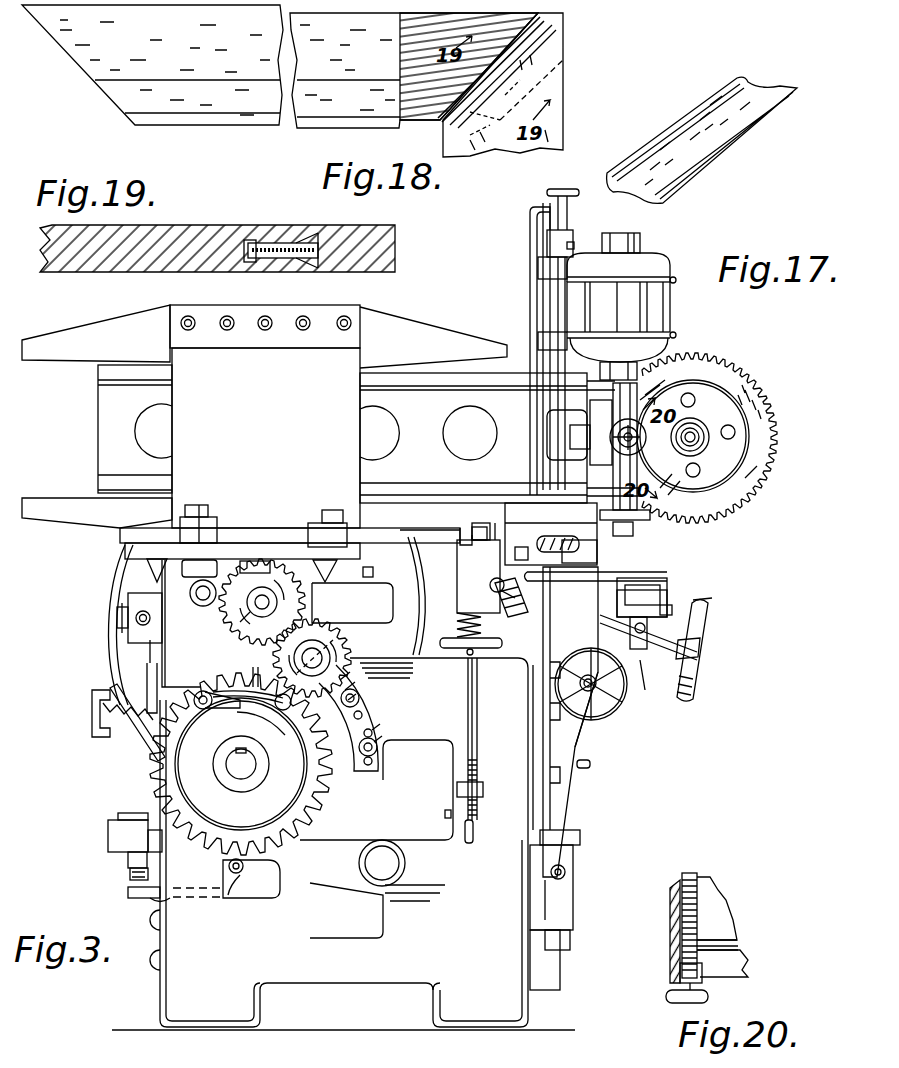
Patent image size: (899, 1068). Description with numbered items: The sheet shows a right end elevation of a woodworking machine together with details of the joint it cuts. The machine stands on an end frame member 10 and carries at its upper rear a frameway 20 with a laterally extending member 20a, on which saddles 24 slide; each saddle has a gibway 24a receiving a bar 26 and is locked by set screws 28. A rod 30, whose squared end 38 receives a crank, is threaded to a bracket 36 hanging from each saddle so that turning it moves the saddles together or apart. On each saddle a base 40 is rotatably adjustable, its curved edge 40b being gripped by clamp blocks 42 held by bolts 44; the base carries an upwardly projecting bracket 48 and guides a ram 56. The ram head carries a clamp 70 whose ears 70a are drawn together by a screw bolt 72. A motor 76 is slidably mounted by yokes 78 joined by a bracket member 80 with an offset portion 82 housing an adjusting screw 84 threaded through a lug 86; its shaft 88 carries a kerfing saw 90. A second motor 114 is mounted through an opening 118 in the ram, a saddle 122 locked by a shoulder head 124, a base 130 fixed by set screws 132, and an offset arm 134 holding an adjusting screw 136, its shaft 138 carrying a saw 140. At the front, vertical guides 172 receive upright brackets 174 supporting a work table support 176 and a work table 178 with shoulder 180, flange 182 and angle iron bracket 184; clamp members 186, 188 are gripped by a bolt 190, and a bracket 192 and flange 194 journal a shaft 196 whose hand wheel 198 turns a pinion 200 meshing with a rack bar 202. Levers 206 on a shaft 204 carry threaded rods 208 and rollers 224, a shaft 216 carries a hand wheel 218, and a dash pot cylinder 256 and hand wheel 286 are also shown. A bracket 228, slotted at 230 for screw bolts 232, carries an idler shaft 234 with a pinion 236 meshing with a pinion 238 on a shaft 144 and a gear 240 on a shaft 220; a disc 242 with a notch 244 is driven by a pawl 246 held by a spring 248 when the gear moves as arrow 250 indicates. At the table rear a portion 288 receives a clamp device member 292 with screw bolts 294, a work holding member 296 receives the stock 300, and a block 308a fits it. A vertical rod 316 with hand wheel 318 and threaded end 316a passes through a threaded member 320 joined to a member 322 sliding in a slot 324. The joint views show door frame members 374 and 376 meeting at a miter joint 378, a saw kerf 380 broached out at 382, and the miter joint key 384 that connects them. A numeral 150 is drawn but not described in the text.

In FIG. 3, the end frame member 10 is at (343, 844).
In FIG. 3, the frameway 20 is at (181, 623).
In FIG. 3, the laterally extending member 20a is at (148, 566).
In FIG. 3, the saddle 24 is at (242, 553).
In FIG. 3, the gibway 24a is at (159, 561).
In FIG. 3, the bar 26 is at (326, 561).
In FIG. 3, the set screw 28 is at (368, 578).
In FIG. 3, the rod or shaft 30 is at (190, 605).
In FIG. 3, the bracket 36 is at (248, 568).
In FIG. 3, the squared end 38 is at (203, 606).
In FIG. 3, the base 40 is at (290, 536).
In FIG. 3, the curved edge 40b is at (424, 536).
In FIG. 3, the clamp block 42 is at (217, 527).
In FIG. 3, the bolt 44 is at (325, 510).
In FIG. 3, the upwardly projecting bracket 48 is at (265, 416).
In FIG. 3, the ram 56 is at (342, 434).
In FIG. 3, the clamp 70 is at (600, 385).
In FIG. 3, the ear 70a is at (600, 465).
In FIG. 3, the screw bolt 72 is at (612, 368).
In FIG. 3, the motor 76 is at (621, 297).
In FIG. 3, the yoke 78 is at (545, 268).
In FIG. 3, the bracket member 80 is at (542, 302).
In FIG. 3, the offset portion 82 is at (540, 208).
In FIG. 3, the adjusting screw 84 is at (565, 180).
In FIG. 3, the lug 86 is at (573, 244).
In FIG. 3, the motor shaft 88 is at (626, 522).
In FIG. 3, the kerfing saw 90 is at (636, 524).
In FIG. 20, the motor 114 is at (720, 919).
In FIG. 3, the motor 114 is at (718, 395).
In FIG. 3, the opening 118 is at (567, 435).
In FIG. 20, the saddle 122 is at (673, 927).
In FIG. 3, the saddle 122 is at (708, 416).
In FIG. 3, the shoulder head 124 is at (580, 437).
In FIG. 20, the motor base 130 is at (695, 872).
In FIG. 3, the motor base 130 is at (640, 418).
In FIG. 3, the set screw 132 is at (657, 385).
In FIG. 20, the offset arm 134 is at (702, 980).
In FIG. 20, the adjusting screw 136 is at (700, 955).
In FIG. 3, the adjusting screw 136 is at (650, 440).
In FIG. 3, the motor shaft 138 is at (683, 450).
In FIG. 3, the saw 140 is at (730, 508).
In FIG. 3, the shaft 144 is at (262, 602).
In FIG. 3, the arcuate guide 150 is at (112, 600).
In FIG. 3, the vertical guide 172 is at (560, 745).
In FIG. 3, the upright bracket 174 is at (570, 722).
In FIG. 3, the work table support 176 is at (600, 572).
In FIG. 3, the work table 178 is at (541, 557).
In FIG. 3, the shoulder 180 is at (481, 568).
In FIG. 3, the flange 182 is at (660, 578).
In FIG. 3, the angle iron bracket 184 is at (672, 592).
In FIG. 3, the clamp member 186 is at (650, 625).
In FIG. 3, the clamp member 188 is at (705, 604).
In FIG. 3, the bolt 190 is at (685, 609).
In FIG. 3, the bracket 192 is at (665, 590).
In FIG. 3, the flange 194 is at (520, 630).
In FIG. 3, the shaft 196 is at (655, 650).
In FIG. 3, the hand wheel 198 is at (706, 625).
In FIG. 3, the pinion 200 is at (518, 616).
In FIG. 3, the rack bar 202 is at (490, 585).
In FIG. 3, the shaft 204 is at (405, 866).
In FIG. 3, the lever 206 is at (322, 610).
In FIG. 3, the threaded rod 208 is at (580, 836).
In FIG. 3, the shaft 216 is at (585, 676).
In FIG. 3, the hand wheel 218 is at (612, 718).
In FIG. 3, the shaft 220 is at (244, 772).
In FIG. 3, the roller 224 is at (236, 900).
In FIG. 3, the bracket 228 is at (372, 722).
In FIG. 3, the slot 230 is at (372, 734).
In FIG. 3, the screw bolt 232 is at (360, 698).
In FIG. 3, the idler shaft 234 is at (340, 660).
In FIG. 3, the pinion 236 is at (312, 658).
In FIG. 3, the pinion 238 is at (245, 622).
In FIG. 3, the gear 240 is at (322, 806).
In FIG. 3, the disc 242 is at (241, 764).
In FIG. 3, the notch 244 is at (253, 721).
In FIG. 3, the pawl 246 is at (207, 705).
In FIG. 3, the spring 248 is at (211, 676).
In FIG. 3, the arrow 250 is at (258, 762).
In FIG. 3, the dash pot cylinder 256 is at (575, 876).
In FIG. 3, the hand wheel 286 is at (588, 768).
In FIG. 3, the portion 288 is at (490, 598).
In FIG. 3, the clamp device member 292 is at (479, 530).
In FIG. 3, the screw bolt 294 is at (496, 523).
In FIG. 3, the work holding member 296 is at (587, 554).
In FIG. 3, the stock 300 is at (572, 536).
In FIG. 3, the block 308a is at (551, 534).
In FIG. 3, the vertical rod 316 is at (478, 682).
In FIG. 3, the threaded end 316a is at (478, 765).
In FIG. 3, the hand wheel 318 is at (457, 638).
In FIG. 3, the threaded member 320 is at (483, 789).
In FIG. 3, the bar member 322 is at (447, 814).
In FIG. 3, the vertical slot 324 is at (474, 836).
In FIG. 19, the door frame member 374 is at (205, 105).
In FIG. 18, the door frame member 376 is at (562, 118).
In FIG. 18, the miter joint 378 is at (556, 20).
In FIG. 19, the saw kerf 380 is at (272, 243).
In FIG. 19, the broached slot 382 is at (250, 242).
In FIG. 19, the miter joint key 384 is at (302, 240).
In FIG. 18, the miter joint key 384 is at (540, 44).
In FIG. 17, the miter joint key 384 is at (731, 100).